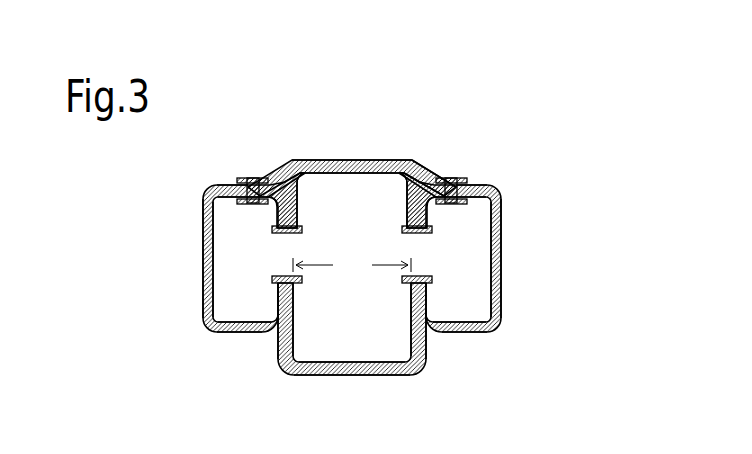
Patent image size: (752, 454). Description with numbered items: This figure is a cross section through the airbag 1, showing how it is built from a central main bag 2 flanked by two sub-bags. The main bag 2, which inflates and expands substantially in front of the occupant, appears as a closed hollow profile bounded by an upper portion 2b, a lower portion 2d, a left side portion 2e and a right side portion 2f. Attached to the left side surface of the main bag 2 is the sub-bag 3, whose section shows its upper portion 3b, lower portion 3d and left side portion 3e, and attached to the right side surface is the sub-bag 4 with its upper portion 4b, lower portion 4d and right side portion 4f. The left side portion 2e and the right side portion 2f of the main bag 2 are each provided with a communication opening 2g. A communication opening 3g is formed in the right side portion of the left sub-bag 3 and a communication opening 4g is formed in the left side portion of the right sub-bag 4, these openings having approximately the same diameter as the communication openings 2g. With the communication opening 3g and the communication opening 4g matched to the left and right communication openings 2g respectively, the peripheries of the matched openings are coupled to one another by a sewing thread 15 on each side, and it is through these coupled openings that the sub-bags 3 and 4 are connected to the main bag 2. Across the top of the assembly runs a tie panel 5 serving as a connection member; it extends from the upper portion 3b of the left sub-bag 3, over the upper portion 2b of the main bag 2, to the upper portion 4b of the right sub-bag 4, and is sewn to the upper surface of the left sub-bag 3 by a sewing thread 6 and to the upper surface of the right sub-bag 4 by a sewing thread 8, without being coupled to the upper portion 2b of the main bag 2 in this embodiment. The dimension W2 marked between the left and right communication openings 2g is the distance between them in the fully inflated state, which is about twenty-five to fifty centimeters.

The airbag 1 is at (541, 103).
The main bag 2 is at (351, 390).
The upper portion 2b is at (324, 160).
The lower portion 2d is at (327, 376).
The left side portion 2e is at (278, 342).
The right side portion 2f is at (428, 345).
The communication opening 2g is at (292, 248).
The sub-bag 3 is at (239, 348).
The upper portion 3b is at (222, 186).
The lower portion 3d is at (228, 338).
The left side portion 3e is at (202, 258).
The communication opening 3g is at (280, 256).
The sub-bag 4 is at (460, 344).
The upper portion 4b is at (484, 185).
The lower portion 4d is at (470, 333).
The right side portion 4f is at (503, 262).
The communication opening 4g is at (424, 254).
The tie panel 5 is at (426, 175).
The sewing thread 6 is at (253, 178).
The sewing thread 8 is at (455, 178).
The sewing thread 15 is at (303, 226).
The distance W2 is at (352, 268).